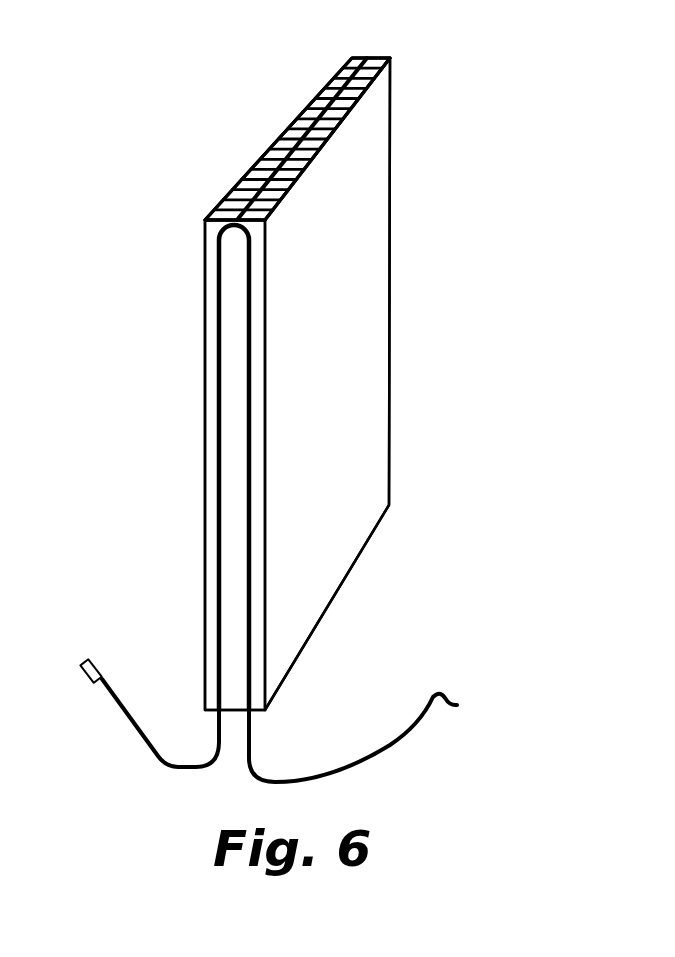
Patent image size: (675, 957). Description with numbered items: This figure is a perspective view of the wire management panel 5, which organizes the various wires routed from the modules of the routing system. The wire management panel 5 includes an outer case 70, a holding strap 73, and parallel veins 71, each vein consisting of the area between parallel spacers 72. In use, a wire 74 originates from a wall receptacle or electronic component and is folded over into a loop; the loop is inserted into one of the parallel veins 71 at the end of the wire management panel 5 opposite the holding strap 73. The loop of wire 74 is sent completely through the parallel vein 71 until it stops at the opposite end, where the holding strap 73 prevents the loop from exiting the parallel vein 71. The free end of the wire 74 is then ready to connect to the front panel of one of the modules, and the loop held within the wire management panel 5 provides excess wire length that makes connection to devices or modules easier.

The wire management panel 5 is at (240, 96).
The outer case 70 is at (388, 205).
The parallel veins 71 is at (352, 60).
The parallel spacers 72 is at (247, 178).
The holding strap 73 is at (367, 58).
The wire 74 is at (268, 503).